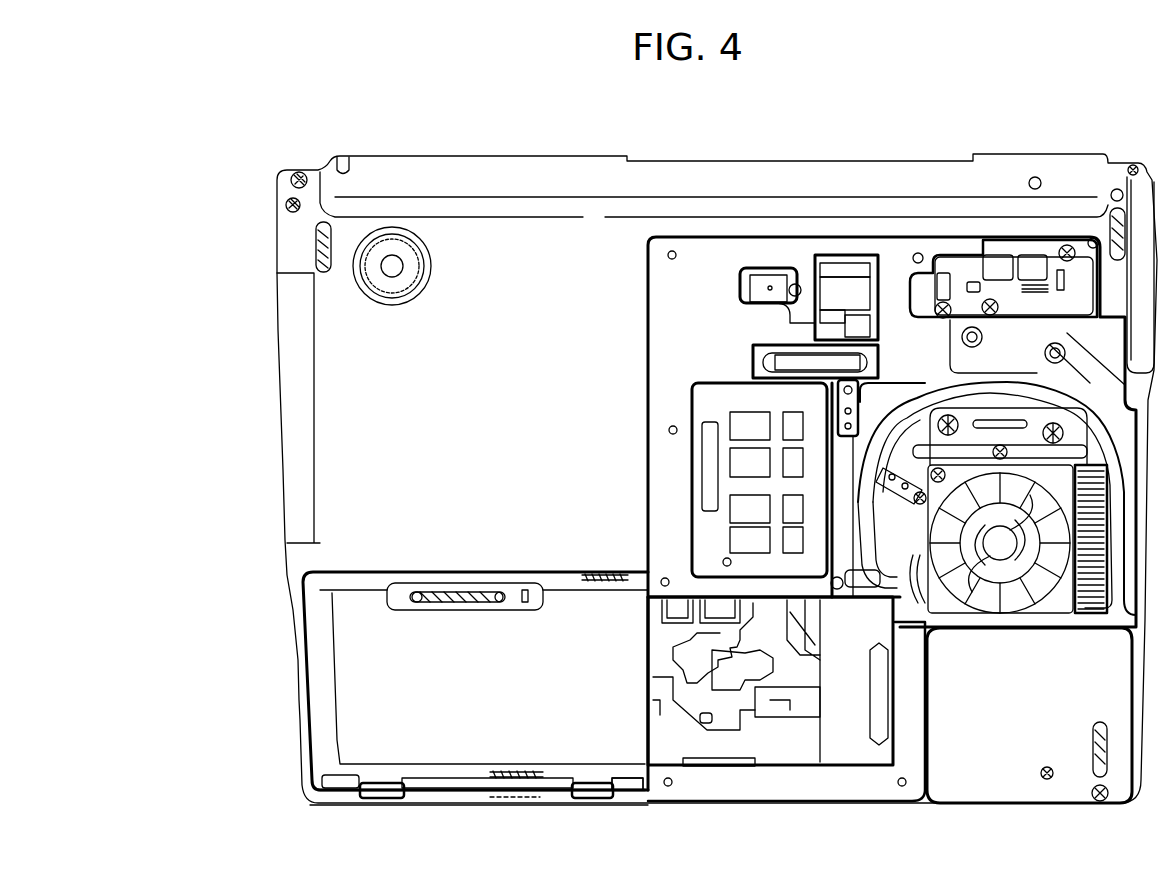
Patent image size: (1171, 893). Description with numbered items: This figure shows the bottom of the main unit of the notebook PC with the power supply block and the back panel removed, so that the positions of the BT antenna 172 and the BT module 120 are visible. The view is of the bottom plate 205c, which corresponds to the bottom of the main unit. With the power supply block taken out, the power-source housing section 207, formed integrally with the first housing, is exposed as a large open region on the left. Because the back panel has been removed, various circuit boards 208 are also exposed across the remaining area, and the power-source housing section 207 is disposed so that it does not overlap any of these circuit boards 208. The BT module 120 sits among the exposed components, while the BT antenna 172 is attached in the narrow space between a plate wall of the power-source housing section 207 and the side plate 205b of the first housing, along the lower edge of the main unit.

The bottom plate 205c is at (774, 142).
The side plate 205b is at (623, 798).
The power-source housing section 207 is at (367, 693).
The circuit boards 208 is at (968, 262).
The BT module 120 is at (802, 310).
The BT antenna 172 is at (520, 800).